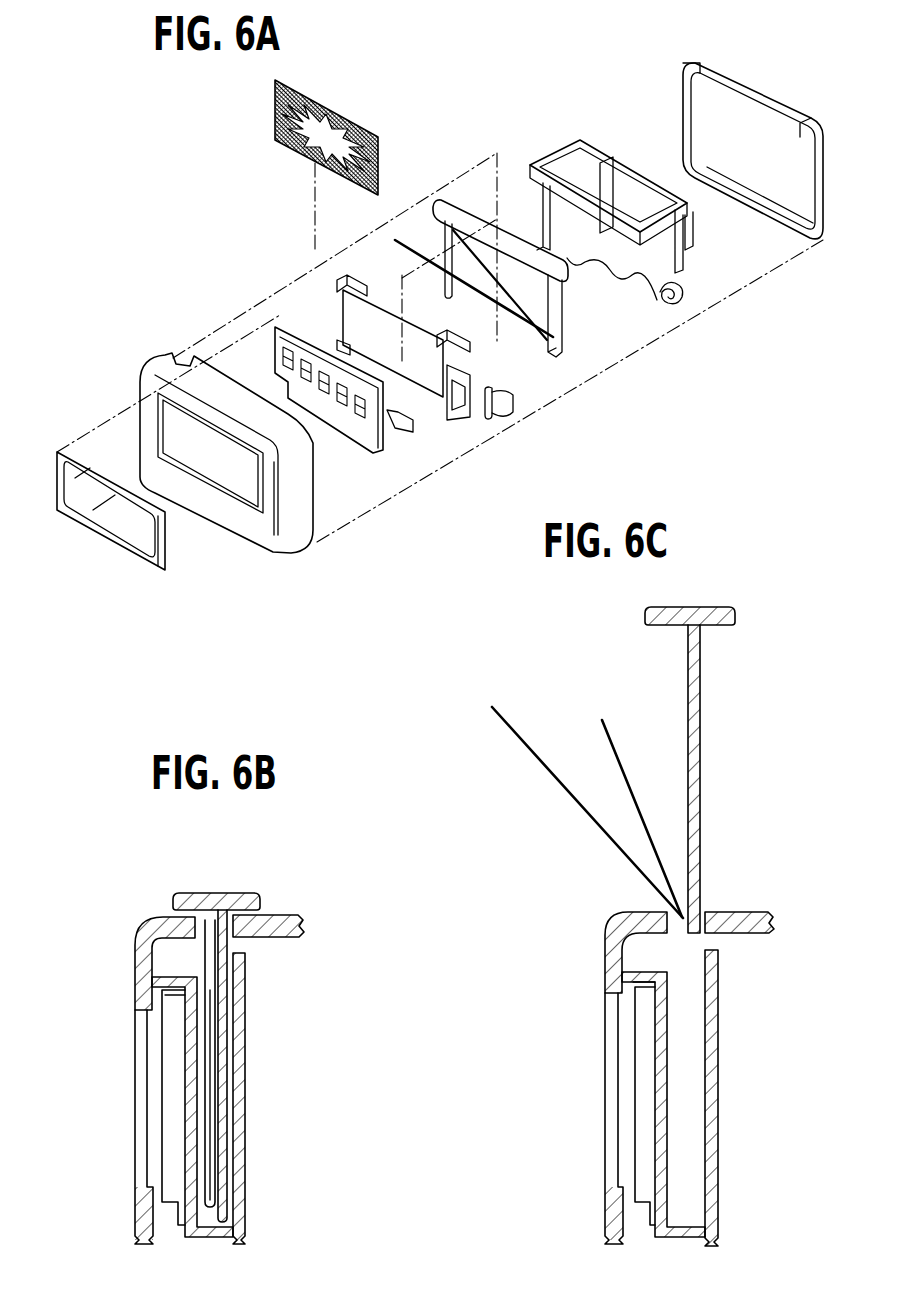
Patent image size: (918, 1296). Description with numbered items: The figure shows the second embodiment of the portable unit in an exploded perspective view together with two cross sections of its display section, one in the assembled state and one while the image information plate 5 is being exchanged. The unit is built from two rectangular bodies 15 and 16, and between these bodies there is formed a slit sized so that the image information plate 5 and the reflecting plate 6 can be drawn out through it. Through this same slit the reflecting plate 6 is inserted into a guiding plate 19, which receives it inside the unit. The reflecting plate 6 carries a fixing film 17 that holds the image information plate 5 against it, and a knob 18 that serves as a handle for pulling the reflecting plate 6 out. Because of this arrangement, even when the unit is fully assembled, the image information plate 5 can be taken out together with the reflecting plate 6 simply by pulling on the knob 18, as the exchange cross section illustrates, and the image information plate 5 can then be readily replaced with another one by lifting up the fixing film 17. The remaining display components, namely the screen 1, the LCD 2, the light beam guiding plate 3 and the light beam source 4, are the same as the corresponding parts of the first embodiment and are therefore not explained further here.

In FIG. 6A, the screen 1 is at (100, 532).
In FIG. 6B, the screen 1 is at (141, 1059).
In FIG. 6C, the screen 1 is at (612, 1048).
In FIG. 6A, the LCD 2 is at (275, 330).
In FIG. 6B, the LCD 2 is at (172, 1118).
In FIG. 6C, the LCD 2 is at (647, 1118).
In FIG. 6A, the light beam guiding plate 3 is at (343, 313).
In FIG. 6B, the light beam guiding plate 3 is at (177, 978).
In FIG. 6C, the light beam guiding plate 3 is at (650, 975).
In FIG. 6A, the light beam source 4 is at (495, 395).
In FIG. 6A, the image information plate 5 is at (333, 110).
In FIG. 6C, the image information plate 5 is at (613, 740).
In FIG. 6A, the reflecting plate 6 is at (535, 297).
In FIG. 6B, the reflecting plate 6 is at (207, 1140).
In FIG. 6C, the reflecting plate 6 is at (690, 757).
In FIG. 6A, the rectangular body 15 is at (250, 547).
In FIG. 6B, the rectangular body 15 is at (165, 917).
In FIG. 6C, the rectangular body 15 is at (630, 920).
In FIG. 6A, the rectangular body 16 is at (730, 73).
In FIG. 6B, the rectangular body 16 is at (280, 913).
In FIG. 6C, the rectangular body 16 is at (739, 922).
In FIG. 6A, the fixing film 17 is at (395, 240).
In FIG. 6C, the fixing film 17 is at (533, 758).
In FIG. 6A, the knob 18 is at (512, 220).
In FIG. 6B, the knob 18 is at (217, 893).
In FIG. 6C, the knob 18 is at (697, 607).
In FIG. 6A, the guiding plate 19 is at (627, 167).
In FIG. 6B, the guiding plate 19 is at (240, 1042).
In FIG. 6C, the guiding plate 19 is at (712, 1020).